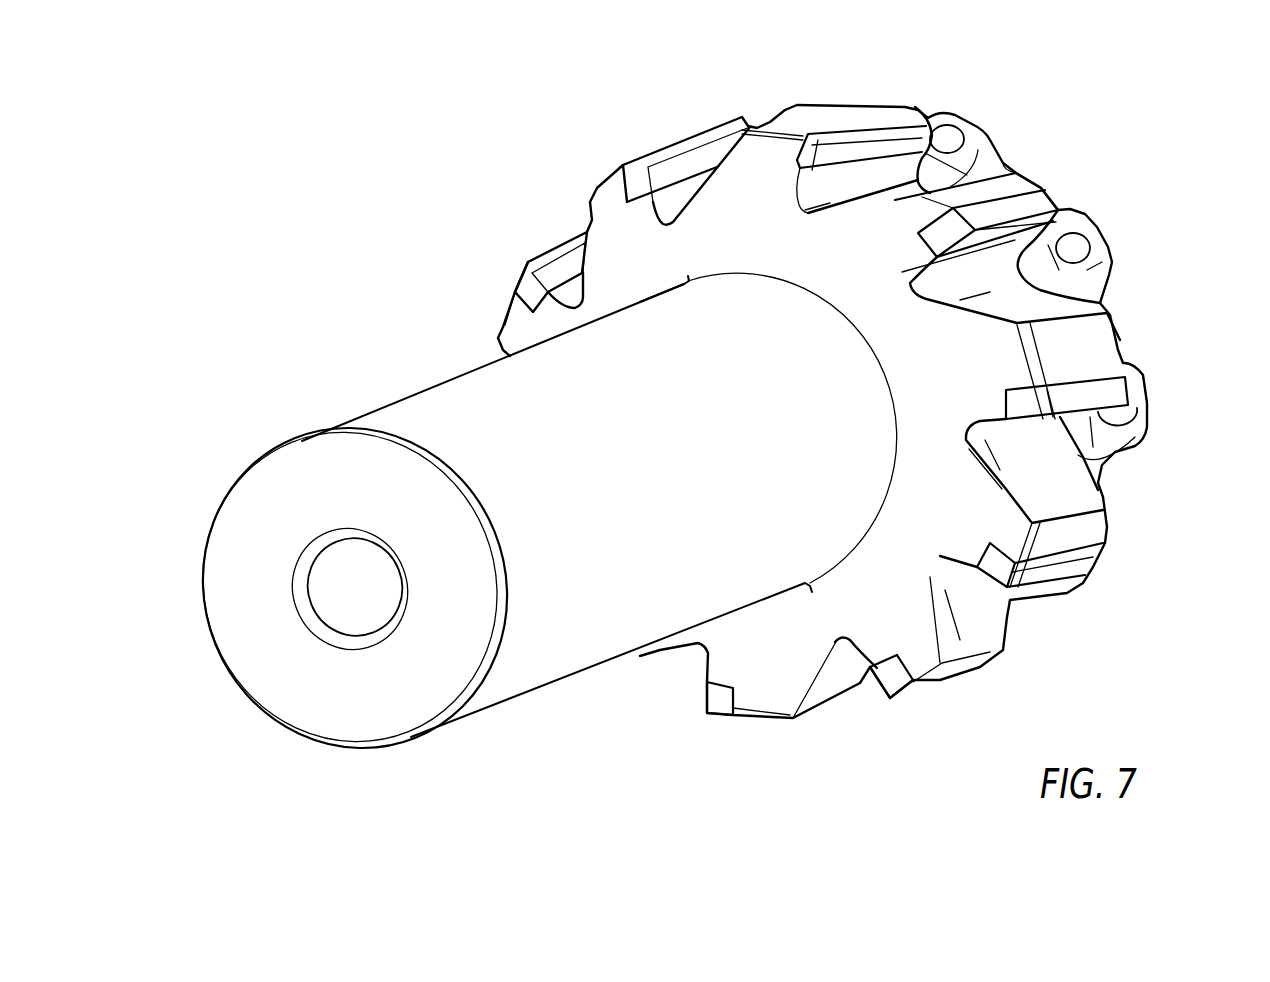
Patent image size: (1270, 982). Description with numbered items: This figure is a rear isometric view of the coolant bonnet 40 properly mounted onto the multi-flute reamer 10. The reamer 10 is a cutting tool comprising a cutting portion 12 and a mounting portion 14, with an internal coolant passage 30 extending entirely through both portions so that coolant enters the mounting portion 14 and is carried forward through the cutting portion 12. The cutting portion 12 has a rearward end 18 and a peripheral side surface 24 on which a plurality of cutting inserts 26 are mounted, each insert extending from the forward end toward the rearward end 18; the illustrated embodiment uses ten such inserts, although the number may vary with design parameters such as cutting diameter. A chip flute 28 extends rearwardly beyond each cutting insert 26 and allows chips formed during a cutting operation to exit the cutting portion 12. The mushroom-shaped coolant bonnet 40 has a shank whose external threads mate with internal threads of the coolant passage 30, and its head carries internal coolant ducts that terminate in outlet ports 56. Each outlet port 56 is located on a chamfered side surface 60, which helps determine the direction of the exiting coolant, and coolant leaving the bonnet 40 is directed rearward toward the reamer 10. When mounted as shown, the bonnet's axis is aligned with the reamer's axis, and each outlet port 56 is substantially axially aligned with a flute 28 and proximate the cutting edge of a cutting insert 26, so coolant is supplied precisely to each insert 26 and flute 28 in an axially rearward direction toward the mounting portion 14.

The multi-flute reamer 10 is at (298, 201).
The cutting portion 12 is at (861, 390).
The mounting portion 14 is at (483, 535).
The rearward end 18 is at (829, 334).
The peripheral side surface 24 is at (752, 242).
The cutting inserts 26 is at (786, 171).
The chip flute 28 is at (839, 200).
The internal coolant passage 30 is at (342, 607).
The coolant bonnet 40 is at (1184, 357).
The outlet port 56 is at (955, 137).
The chamfered side surface 60 is at (1106, 270).